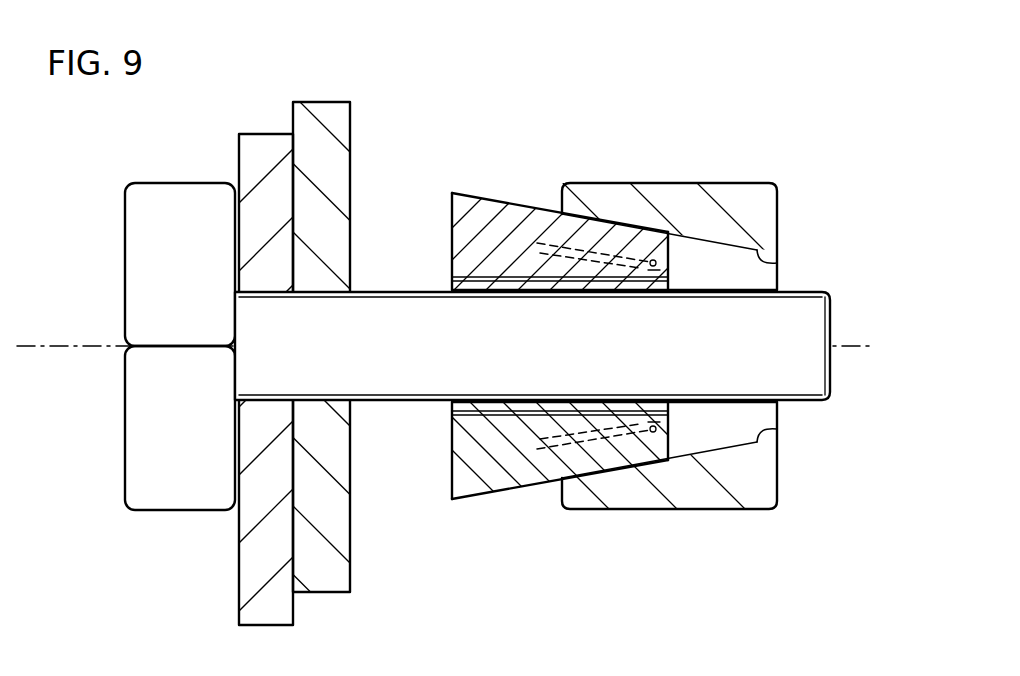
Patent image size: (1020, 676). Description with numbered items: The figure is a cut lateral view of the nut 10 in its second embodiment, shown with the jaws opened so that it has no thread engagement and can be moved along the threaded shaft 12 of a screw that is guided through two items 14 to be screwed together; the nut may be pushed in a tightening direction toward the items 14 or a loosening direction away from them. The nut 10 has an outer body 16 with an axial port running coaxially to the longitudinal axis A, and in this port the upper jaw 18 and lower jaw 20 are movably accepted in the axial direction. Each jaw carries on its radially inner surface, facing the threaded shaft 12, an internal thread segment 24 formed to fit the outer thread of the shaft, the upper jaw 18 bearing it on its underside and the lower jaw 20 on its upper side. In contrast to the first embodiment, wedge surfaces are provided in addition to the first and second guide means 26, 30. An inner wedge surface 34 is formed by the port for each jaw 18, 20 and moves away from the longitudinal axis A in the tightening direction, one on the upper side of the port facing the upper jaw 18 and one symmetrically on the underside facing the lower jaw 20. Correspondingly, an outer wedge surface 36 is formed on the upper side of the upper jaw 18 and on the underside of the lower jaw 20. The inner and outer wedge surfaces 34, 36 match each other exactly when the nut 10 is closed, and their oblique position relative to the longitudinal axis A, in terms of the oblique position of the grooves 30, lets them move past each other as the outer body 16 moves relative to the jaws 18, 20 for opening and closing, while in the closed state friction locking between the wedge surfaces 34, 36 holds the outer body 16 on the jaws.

The nut 10 is at (622, 303).
The threaded shaft 12 is at (497, 346).
The items to be screwed together 14 is at (300, 102).
The outer body 16 is at (708, 183).
The upper jaw 18 is at (450, 240).
The lower jaw 20 is at (448, 442).
The internal thread segment 24 is at (450, 288).
The first guide means 26 is at (653, 262).
The grooves 30 is at (547, 243).
The inner wedge surface 34 is at (777, 262).
The outer wedge surface 36 is at (513, 204).
The longitudinal axis A is at (65, 343).